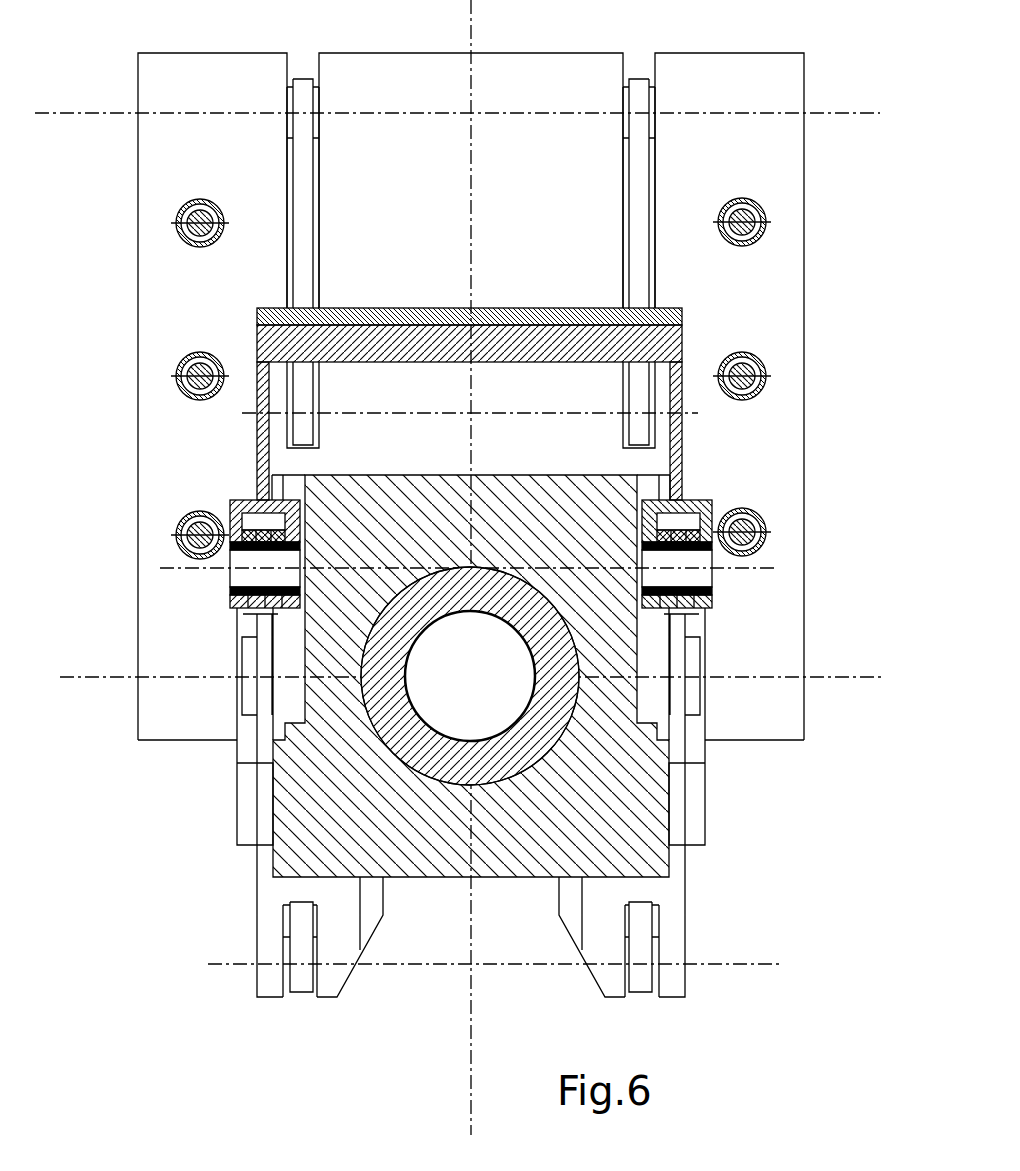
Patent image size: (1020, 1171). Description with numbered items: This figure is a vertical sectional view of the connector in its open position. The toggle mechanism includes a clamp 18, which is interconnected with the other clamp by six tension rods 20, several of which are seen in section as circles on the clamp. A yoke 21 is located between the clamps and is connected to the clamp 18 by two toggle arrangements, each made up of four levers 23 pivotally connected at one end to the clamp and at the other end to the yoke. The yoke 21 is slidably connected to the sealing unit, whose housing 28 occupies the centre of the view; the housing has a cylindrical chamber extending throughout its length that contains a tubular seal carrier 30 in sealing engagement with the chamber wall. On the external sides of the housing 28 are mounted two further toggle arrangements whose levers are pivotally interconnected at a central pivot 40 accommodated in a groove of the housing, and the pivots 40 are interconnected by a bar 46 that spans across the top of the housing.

The clamp 18 is at (787, 148).
The tension rods 20 is at (190, 523).
The yoke 21 is at (268, 922).
The levers 23 is at (303, 80).
The housing 28 is at (620, 750).
The seal carrier 30 is at (395, 732).
The central pivot 40 is at (238, 573).
The bar 46 is at (707, 330).